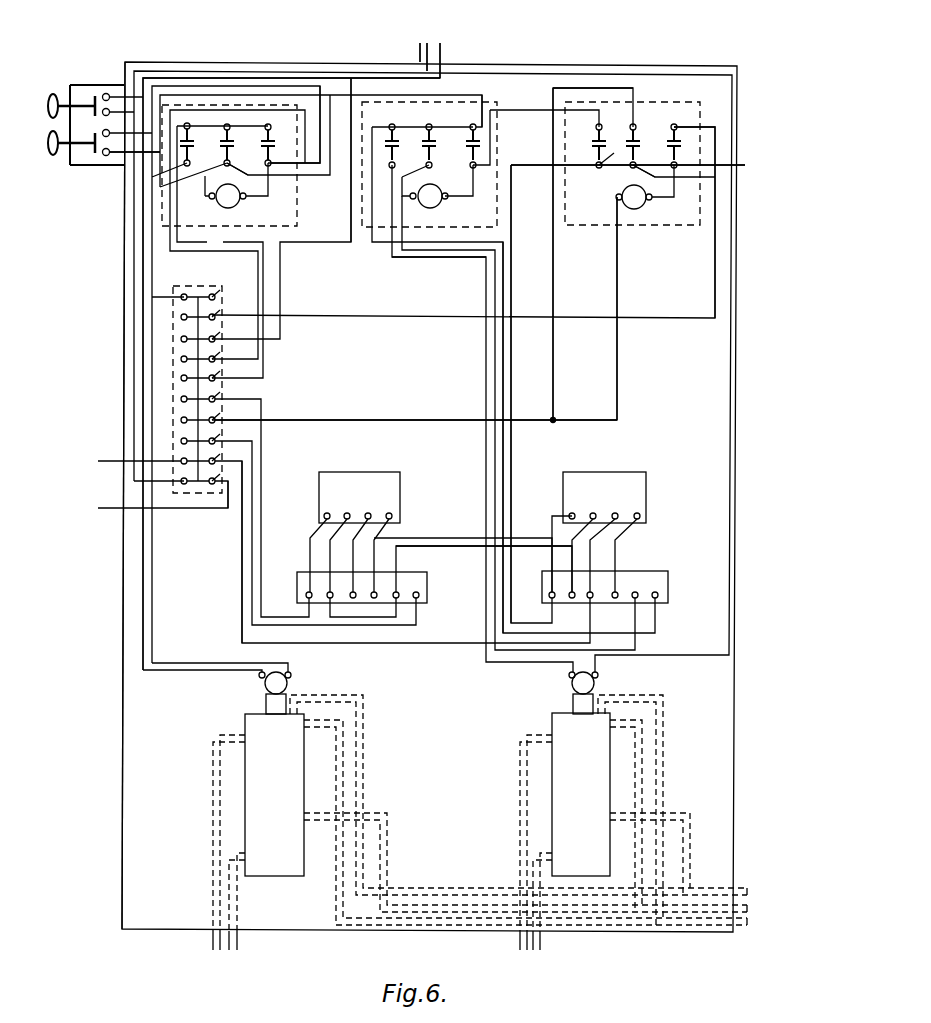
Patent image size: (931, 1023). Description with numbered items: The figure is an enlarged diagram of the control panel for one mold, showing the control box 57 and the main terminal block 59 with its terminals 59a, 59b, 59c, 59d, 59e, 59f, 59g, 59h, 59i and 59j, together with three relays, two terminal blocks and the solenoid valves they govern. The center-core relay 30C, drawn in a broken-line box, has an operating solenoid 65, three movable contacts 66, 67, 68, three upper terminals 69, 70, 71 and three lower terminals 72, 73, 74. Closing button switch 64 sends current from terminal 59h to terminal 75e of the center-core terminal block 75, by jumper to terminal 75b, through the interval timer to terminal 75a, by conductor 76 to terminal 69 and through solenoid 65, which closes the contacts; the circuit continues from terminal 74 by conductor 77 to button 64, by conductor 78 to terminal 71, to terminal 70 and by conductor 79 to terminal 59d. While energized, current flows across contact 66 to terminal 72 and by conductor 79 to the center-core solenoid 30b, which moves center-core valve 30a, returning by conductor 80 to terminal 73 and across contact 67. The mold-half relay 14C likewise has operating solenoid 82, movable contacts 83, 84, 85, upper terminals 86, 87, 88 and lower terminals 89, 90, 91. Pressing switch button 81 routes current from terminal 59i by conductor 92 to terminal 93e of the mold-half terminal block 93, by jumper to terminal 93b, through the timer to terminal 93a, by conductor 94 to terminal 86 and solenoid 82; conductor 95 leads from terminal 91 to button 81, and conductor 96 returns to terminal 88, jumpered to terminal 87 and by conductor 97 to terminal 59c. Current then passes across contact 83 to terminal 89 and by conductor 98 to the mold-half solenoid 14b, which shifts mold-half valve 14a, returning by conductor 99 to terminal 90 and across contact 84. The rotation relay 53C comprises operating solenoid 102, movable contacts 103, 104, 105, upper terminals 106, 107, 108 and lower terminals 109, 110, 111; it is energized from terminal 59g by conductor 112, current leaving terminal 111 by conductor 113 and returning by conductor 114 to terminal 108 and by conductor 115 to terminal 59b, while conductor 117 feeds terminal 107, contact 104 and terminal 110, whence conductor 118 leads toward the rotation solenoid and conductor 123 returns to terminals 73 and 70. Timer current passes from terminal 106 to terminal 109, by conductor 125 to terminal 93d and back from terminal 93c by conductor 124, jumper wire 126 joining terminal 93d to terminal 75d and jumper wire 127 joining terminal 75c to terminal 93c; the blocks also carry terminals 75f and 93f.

The button switch 64 is at (50, 100).
The switch button 81 is at (50, 152).
The conductor 78 is at (110, 94).
The conductor 96 is at (109, 156).
The conductor 79 is at (152, 92).
The control box 57 is at (112, 313).
The center-core relay 30C is at (256, 203).
The movable contact 66 is at (190, 160).
The upper terminal 69 is at (188, 123).
The lower terminal 72 is at (228, 123).
The upper terminal 70 is at (234, 128).
The upper terminal 71 is at (270, 123).
The movable contact 67 is at (253, 125).
The movable contact 68 is at (270, 125).
The lower terminal 73 is at (226, 149).
The lower terminal 74 is at (259, 149).
The conductor 77 is at (310, 156).
The operating solenoid 65 is at (230, 201).
The mold-half relay 14C is at (491, 353).
The movable contact 83 is at (383, 148).
The movable contact 84 is at (435, 142).
The movable contact 85 is at (480, 145).
The upper terminal 86 is at (392, 123).
The upper terminal 87 is at (432, 124).
The upper terminal 88 is at (476, 124).
The conductor 95 is at (486, 118).
The conductor 97 is at (352, 112).
The lower terminal 89 is at (390, 168).
The lower terminal 90 is at (428, 174).
The lower terminal 91 is at (474, 168).
The operating solenoid 82 is at (432, 202).
The conductor 98 is at (385, 263).
The conductor 94 is at (478, 263).
The conductor 124 is at (513, 369).
The conductor 125 is at (508, 225).
The rotation relay 53C is at (649, 227).
The movable contact 103 is at (604, 140).
The movable contact 104 is at (641, 140).
The upper terminal 108 is at (678, 122).
The upper terminal 106 is at (600, 123).
The upper terminal 107 is at (636, 123).
The conductor 114 is at (687, 125).
The conductor 113 is at (748, 163).
The lower terminal 110 is at (613, 158).
The lower terminal 109 is at (597, 169).
The lower terminal 111 is at (640, 178).
The movable contact 105 is at (661, 158).
The operating solenoid 102 is at (637, 209).
The conductor 112 is at (618, 373).
The conductor 115 is at (715, 241).
The conductor 117 is at (553, 266).
The conductor 118 is at (505, 80).
The conductor 123 is at (441, 47).
The main terminal block 59 is at (352, 450).
The terminal 59a is at (218, 290).
The terminal 59b is at (220, 315).
The terminal 59c is at (220, 337).
The terminal 59d is at (220, 357).
The terminal 59e is at (220, 376).
The terminal 59f is at (220, 397).
The terminal 59g is at (220, 418).
The terminal 59h is at (220, 439).
The terminal 59i is at (222, 461).
The terminal 59j is at (222, 483).
The conductor 76 is at (250, 509).
The conductor 92 is at (232, 516).
The center-core terminal block 75 is at (418, 532).
The terminal 75a is at (305, 596).
The terminal 75b is at (327, 592).
The terminal 75c is at (350, 590).
The terminal 75d is at (378, 590).
The terminal 75e is at (398, 590).
The timer terminal 75f is at (420, 592).
The jumper wire 127 is at (508, 536).
The jumper wire 126 is at (518, 546).
The mold-half terminal block 93 is at (610, 549).
The terminal 93a is at (548, 596).
The terminal 93b is at (570, 592).
The terminal 93c is at (592, 592).
The terminal 93d is at (618, 592).
The terminal 93e is at (637, 600).
The timer terminal 93f is at (660, 592).
The conductor 80 is at (290, 667).
The center-core solenoid 30b is at (284, 686).
The center-core valve 30a is at (270, 801).
The conductor 99 is at (596, 667).
The mold-half solenoid 14b is at (592, 689).
The mold-half valve 14a is at (572, 806).